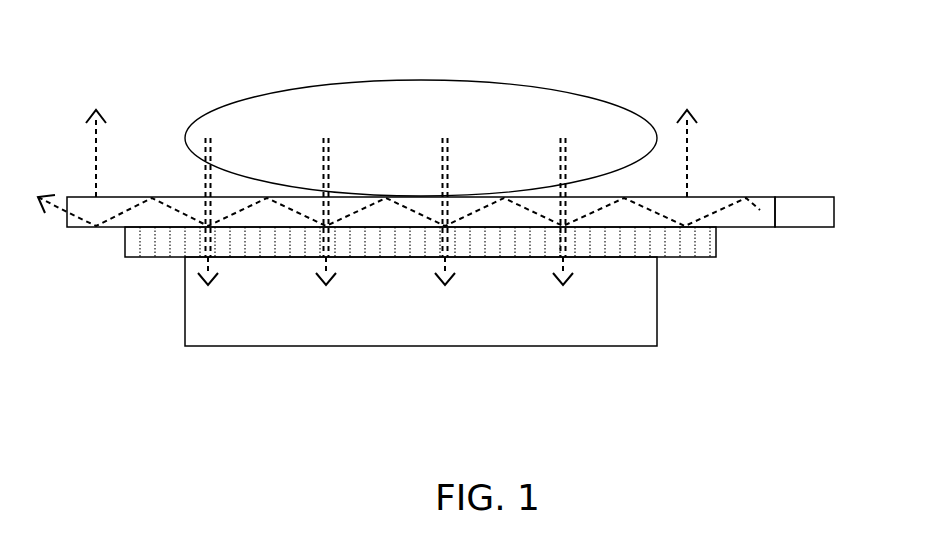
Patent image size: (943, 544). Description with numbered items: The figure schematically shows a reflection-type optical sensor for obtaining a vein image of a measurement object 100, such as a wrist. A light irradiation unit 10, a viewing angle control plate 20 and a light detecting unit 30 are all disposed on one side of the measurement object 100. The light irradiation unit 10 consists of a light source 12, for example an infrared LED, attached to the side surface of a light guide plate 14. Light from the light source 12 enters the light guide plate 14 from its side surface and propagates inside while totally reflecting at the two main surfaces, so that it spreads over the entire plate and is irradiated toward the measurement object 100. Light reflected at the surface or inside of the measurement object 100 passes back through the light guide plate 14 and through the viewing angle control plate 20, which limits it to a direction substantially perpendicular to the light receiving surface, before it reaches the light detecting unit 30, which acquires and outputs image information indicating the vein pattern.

The light irradiation unit 10 is at (450, 283).
The light source 12 is at (804, 253).
The light guide plate 14 is at (762, 212).
The viewing angle control plate 20 is at (137, 242).
The light detecting unit 30 is at (502, 317).
The measurement object 100 is at (575, 110).